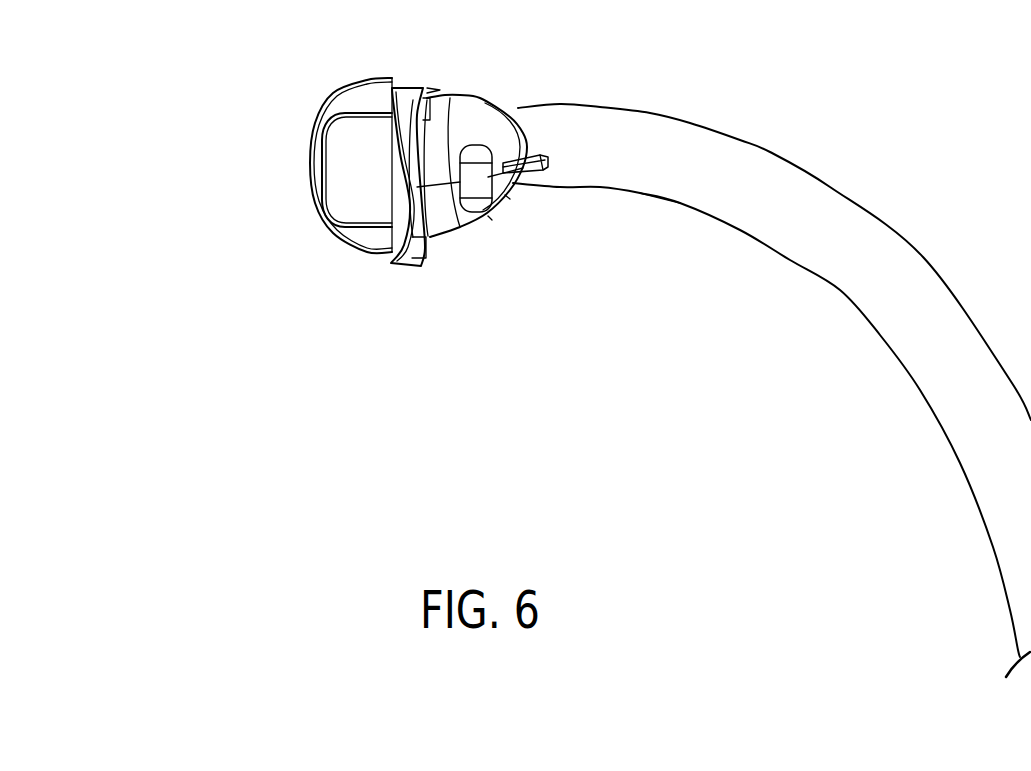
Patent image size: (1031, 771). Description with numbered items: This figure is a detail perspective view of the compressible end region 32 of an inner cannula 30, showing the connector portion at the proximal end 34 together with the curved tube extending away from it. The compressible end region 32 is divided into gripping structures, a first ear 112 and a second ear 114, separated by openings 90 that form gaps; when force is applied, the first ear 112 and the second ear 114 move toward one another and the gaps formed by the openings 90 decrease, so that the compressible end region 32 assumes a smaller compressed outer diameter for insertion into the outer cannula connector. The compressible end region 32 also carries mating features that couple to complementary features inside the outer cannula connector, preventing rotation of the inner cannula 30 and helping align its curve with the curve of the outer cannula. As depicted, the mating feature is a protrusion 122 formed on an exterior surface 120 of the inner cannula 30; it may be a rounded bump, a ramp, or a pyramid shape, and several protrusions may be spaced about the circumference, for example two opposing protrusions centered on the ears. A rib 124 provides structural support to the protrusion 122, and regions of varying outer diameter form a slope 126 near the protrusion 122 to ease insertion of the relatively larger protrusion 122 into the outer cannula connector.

The inner cannula 30 is at (667, 501).
The compressible end region 32 is at (445, 287).
The proximal end 34 is at (313, 130).
The openings 90 is at (440, 86).
The first ear 112 is at (310, 180).
The second ear 114 is at (417, 164).
The exterior surface 120 is at (507, 197).
The protrusion 122 is at (666, 190).
The rib 124 is at (500, 183).
The slope 126 is at (490, 218).